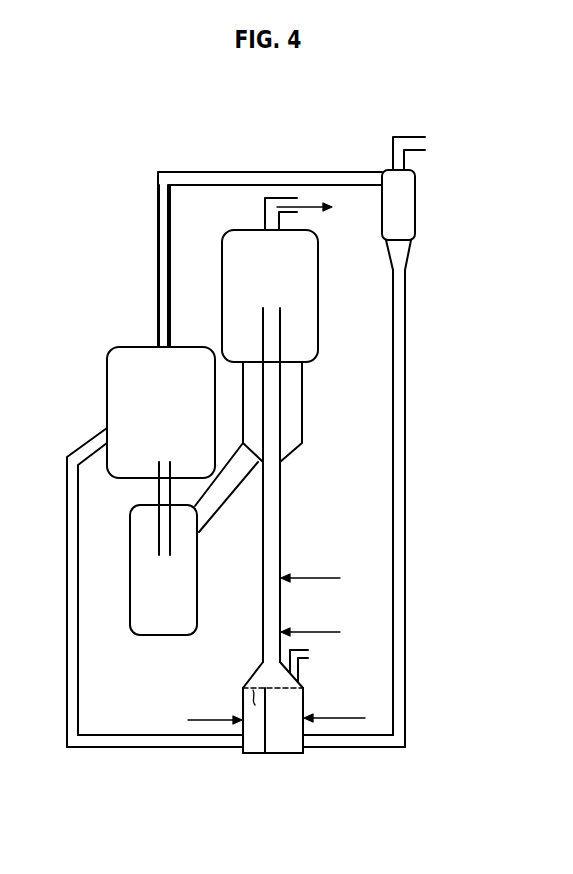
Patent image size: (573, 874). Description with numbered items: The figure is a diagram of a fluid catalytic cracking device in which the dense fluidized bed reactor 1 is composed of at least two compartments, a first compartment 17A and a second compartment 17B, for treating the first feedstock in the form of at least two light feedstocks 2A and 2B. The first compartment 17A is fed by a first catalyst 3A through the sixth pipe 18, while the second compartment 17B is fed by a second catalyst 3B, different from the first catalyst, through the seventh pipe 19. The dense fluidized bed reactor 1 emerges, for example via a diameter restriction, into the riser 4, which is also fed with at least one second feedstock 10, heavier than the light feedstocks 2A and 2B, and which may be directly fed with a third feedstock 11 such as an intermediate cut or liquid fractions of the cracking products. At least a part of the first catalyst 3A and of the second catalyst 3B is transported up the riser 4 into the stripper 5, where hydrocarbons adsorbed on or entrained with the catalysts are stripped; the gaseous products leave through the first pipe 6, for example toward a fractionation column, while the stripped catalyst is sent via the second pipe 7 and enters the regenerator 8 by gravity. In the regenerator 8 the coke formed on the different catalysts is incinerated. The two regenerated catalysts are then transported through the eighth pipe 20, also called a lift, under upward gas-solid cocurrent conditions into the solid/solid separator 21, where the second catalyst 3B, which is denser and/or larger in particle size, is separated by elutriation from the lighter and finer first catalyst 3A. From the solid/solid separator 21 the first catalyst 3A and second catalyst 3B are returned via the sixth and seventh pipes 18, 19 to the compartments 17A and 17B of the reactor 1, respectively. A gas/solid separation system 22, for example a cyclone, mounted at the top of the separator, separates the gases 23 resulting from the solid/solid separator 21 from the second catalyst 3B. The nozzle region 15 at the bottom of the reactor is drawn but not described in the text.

The dense fluidized bed reactor 1 is at (305, 760).
The light feedstock 2A is at (292, 703).
The light feedstock 2B is at (207, 720).
The first catalyst 3A is at (287, 753).
The second catalyst 3B is at (249, 753).
The riser 4 is at (281, 511).
The stripper 5 is at (303, 400).
The first pipe 6 is at (307, 212).
The second pipe 7 is at (231, 497).
The regenerator 8 is at (132, 633).
The second feedstock 10 is at (320, 578).
The third feedstock 11 is at (322, 632).
The nozzle 15 is at (263, 754).
The first compartment 17A is at (292, 705).
The second compartment 17B is at (252, 687).
The sixth pipe 18 is at (158, 236).
The seventh pipe 19 is at (117, 748).
The eighth pipe 20 is at (157, 491).
The solid/solid separator 21 is at (112, 346).
The gas/solid separation system 22 is at (390, 225).
The gases 23 is at (398, 135).